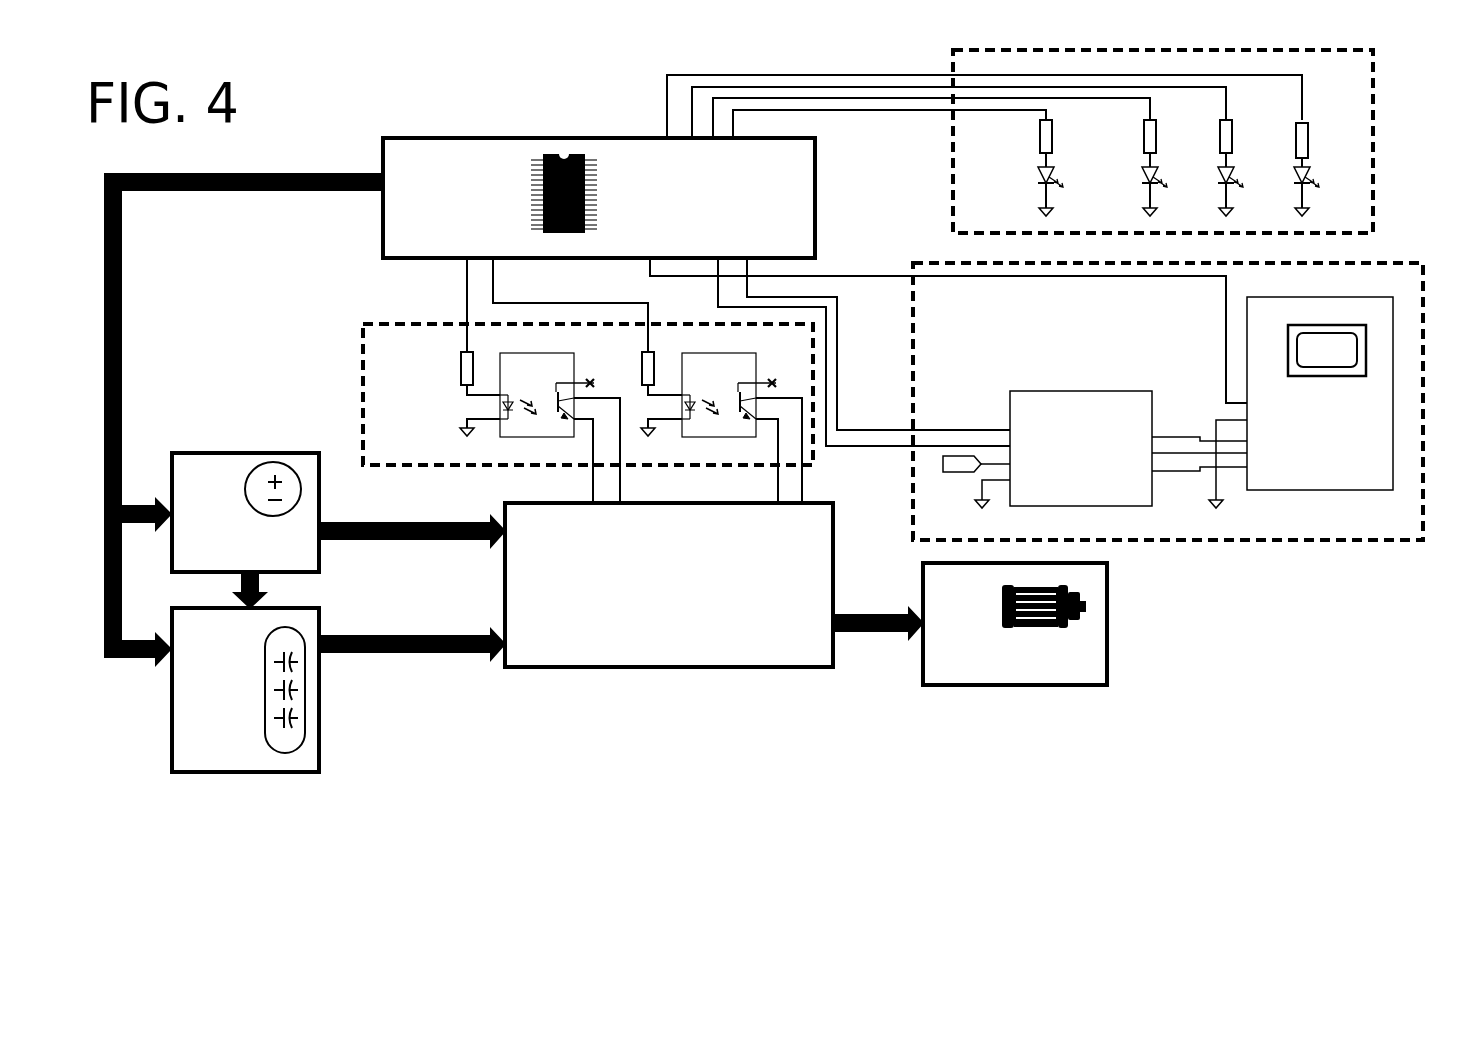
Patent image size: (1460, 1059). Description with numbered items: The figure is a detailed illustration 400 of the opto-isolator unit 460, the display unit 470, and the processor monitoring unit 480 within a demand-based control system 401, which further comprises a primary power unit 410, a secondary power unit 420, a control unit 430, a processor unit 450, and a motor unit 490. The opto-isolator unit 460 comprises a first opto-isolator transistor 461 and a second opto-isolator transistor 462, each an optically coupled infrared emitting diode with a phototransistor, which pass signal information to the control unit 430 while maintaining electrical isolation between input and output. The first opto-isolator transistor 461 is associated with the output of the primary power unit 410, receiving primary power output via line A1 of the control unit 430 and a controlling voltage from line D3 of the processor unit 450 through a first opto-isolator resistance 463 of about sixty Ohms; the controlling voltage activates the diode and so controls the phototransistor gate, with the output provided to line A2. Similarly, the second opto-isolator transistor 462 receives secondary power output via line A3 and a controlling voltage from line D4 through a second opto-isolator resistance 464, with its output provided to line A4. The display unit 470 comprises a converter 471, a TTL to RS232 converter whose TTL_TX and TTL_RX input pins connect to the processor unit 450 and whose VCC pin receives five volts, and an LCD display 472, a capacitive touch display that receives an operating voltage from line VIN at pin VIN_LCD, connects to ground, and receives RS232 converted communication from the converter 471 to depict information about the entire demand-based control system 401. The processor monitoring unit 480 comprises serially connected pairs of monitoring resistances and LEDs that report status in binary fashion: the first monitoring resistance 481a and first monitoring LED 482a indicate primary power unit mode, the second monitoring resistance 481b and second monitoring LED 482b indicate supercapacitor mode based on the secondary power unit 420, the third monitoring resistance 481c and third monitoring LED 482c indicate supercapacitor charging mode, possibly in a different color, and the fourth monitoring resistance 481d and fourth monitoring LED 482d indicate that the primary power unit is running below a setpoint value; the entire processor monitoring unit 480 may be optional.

The detailed illustration 400 is at (1446, 77).
The demand-based control system 401 is at (1129, 622).
The primary power unit 410 is at (245, 512).
The secondary power unit 420 is at (245, 690).
The control unit 430 is at (669, 585).
The processor unit 450 is at (599, 198).
The opto-isolator unit 460 is at (588, 394).
The first opto-isolator transistor 461 is at (540, 428).
The second opto-isolator transistor 462 is at (721, 428).
The first opto-isolator resistance 463 is at (458, 373).
The second opto-isolator resistance 464 is at (640, 373).
The display unit 470 is at (1168, 401).
The converter 471 is at (1086, 448).
The LCD display 472 is at (1314, 393).
The processor monitoring unit 480 is at (1163, 141).
The first monitoring resistance 481a is at (1068, 136).
The second monitoring resistance 481b is at (1172, 136).
The third monitoring resistance 481c is at (1247, 136).
The fourth monitoring resistance 481d is at (1324, 140).
The first monitoring LED 482a is at (1068, 184).
The second monitoring LED 482b is at (1173, 184).
The third monitoring LED 482c is at (1248, 184).
The fourth monitoring LED 482d is at (1325, 187).
The motor unit 490 is at (1015, 624).